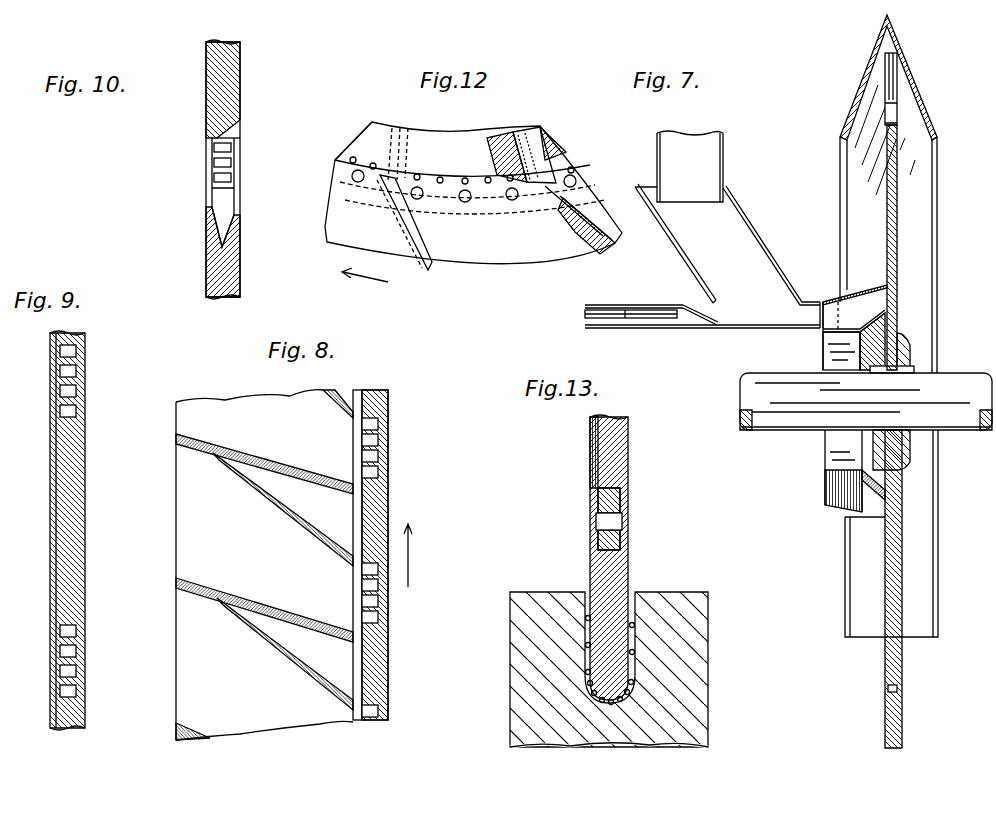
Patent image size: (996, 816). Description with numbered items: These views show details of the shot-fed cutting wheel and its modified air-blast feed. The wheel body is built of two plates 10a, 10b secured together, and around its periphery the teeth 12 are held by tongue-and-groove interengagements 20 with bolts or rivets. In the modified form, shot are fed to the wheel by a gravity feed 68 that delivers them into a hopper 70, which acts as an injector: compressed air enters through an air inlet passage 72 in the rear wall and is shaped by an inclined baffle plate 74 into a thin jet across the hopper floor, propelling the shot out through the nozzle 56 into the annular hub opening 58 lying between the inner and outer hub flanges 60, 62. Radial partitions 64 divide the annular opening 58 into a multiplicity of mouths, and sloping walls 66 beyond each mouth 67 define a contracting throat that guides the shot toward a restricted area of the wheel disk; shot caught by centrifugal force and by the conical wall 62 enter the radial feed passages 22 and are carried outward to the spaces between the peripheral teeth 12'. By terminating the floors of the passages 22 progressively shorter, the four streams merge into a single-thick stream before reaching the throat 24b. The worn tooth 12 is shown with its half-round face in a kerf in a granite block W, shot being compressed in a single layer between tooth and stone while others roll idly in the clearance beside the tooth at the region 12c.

In FIG. 8, the outer hub flange 62 is at (182, 466).
In FIG. 7, the outer hub flange 62 is at (852, 296).
In FIG. 8, the radial partition 64 is at (292, 466).
In FIG. 7, the radial partition 64 is at (848, 492).
In FIG. 8, the sloping wall 66 is at (302, 522).
In FIG. 7, the sloping wall 66 is at (892, 495).
In FIG. 8, the mouth 67 is at (358, 555).
In FIG. 12, the tooth 12 is at (473, 196).
In FIG. 13, the tooth 12 is at (625, 560).
In FIG. 12, the feed passage 22 is at (528, 128).
In FIG. 12, the entrance throat 24b is at (582, 255).
In FIG. 7, the gravity feed 68 is at (724, 150).
In FIG. 7, the hopper 70 is at (750, 224).
In FIG. 7, the air inlet passage 72 is at (608, 312).
In FIG. 7, the inclined baffle plate 74 is at (714, 320).
In FIG. 7, the nozzle 56 is at (814, 304).
In FIG. 7, the annular hub opening 58 is at (826, 322).
In FIG. 7, the inner hub flange 60 is at (840, 332).
In FIG. 7, the peripheral tooth 12' is at (916, 400).
In FIG. 13, the wheel body plate 10a is at (622, 458).
In FIG. 13, the wheel body plate 10b is at (590, 456).
In FIG. 13, the tongue-and-groove interengagement 20 is at (620, 510).
In FIG. 13, the granite block W is at (688, 600).
In FIG. 13, the blade tip 12c is at (600, 683).